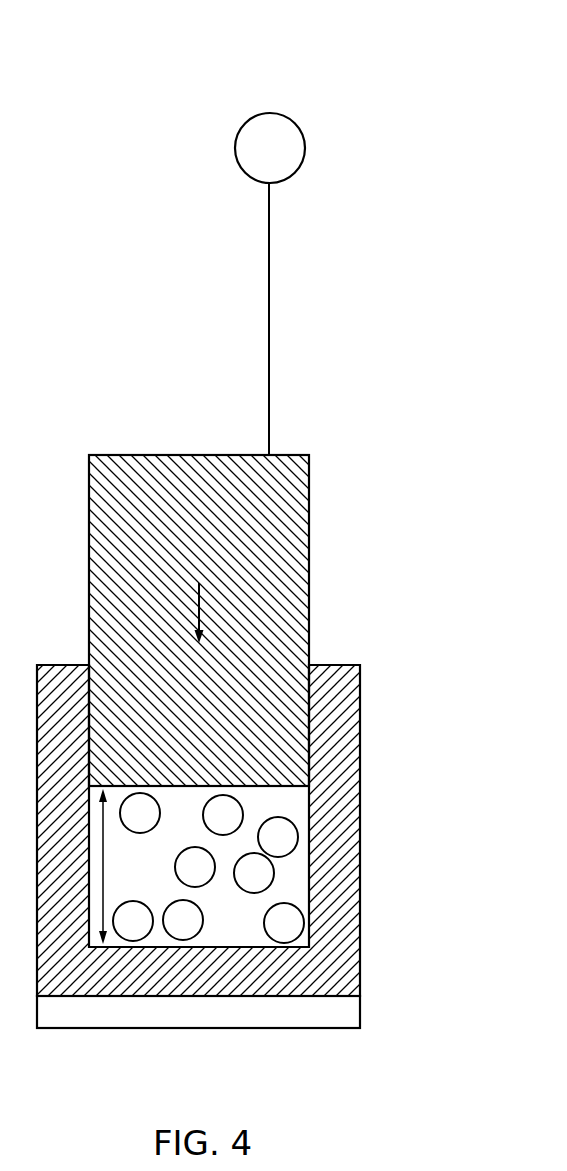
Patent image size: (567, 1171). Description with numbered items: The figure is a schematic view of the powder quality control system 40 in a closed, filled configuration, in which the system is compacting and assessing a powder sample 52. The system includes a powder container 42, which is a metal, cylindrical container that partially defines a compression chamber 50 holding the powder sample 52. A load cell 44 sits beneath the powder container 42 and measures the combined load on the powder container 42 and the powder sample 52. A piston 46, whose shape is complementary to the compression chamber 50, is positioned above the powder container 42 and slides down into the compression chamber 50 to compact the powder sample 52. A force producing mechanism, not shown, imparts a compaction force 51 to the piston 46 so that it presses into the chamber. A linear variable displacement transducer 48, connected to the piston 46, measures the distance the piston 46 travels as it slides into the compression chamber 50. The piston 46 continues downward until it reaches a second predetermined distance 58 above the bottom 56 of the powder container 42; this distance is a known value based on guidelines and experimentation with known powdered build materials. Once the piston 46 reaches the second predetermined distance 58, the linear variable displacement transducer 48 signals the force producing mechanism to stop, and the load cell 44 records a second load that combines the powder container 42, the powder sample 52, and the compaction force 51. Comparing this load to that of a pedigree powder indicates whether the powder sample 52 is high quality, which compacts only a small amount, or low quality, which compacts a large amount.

The powder quality control system 40 is at (396, 78).
The powder container 42 is at (360, 730).
The load cell 44 is at (360, 1012).
The piston 46 is at (309, 618).
The linear variable displacement transducer 48 is at (305, 147).
The compression chamber 50 is at (194, 835).
The compaction force 51 is at (199, 608).
The powder sample 52 is at (197, 786).
The bottom of powder container 56 is at (222, 943).
The second predetermined distance 58 is at (103, 865).